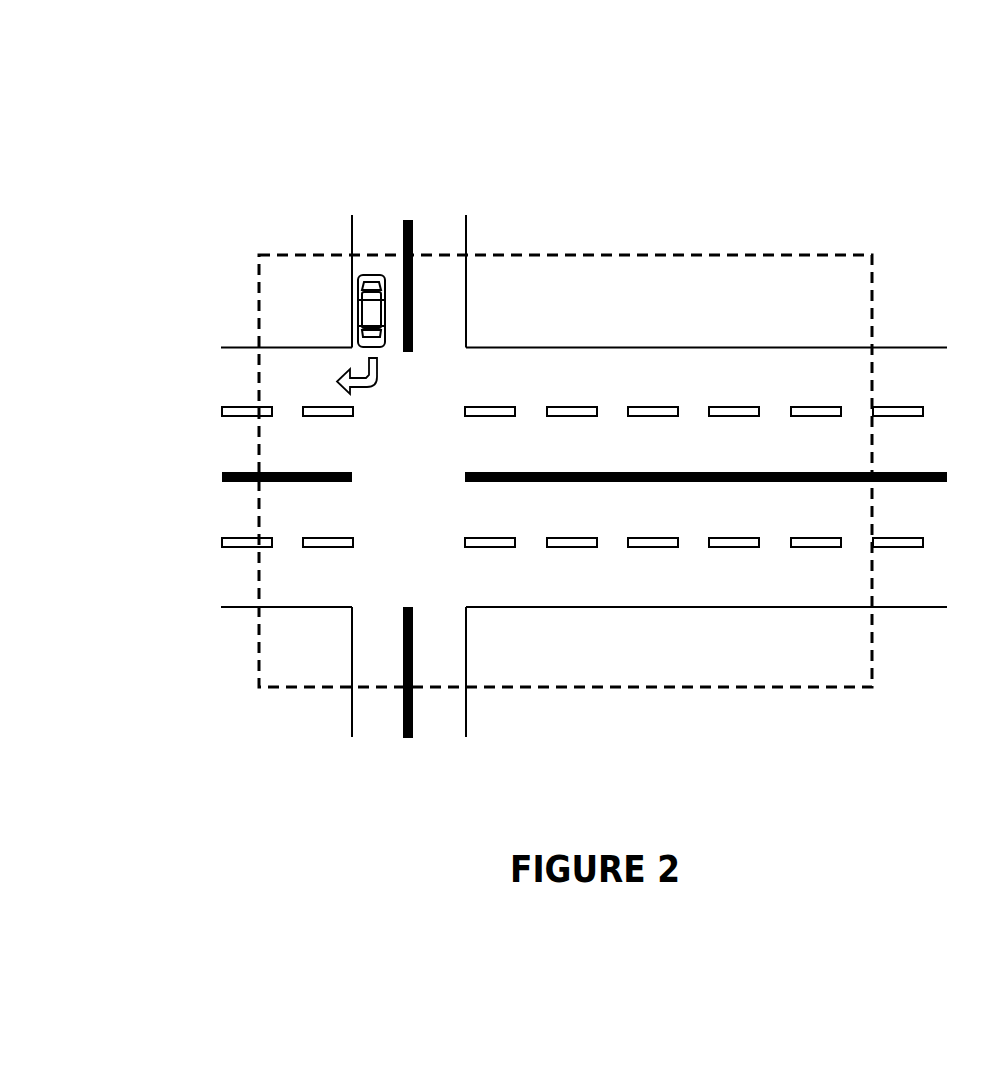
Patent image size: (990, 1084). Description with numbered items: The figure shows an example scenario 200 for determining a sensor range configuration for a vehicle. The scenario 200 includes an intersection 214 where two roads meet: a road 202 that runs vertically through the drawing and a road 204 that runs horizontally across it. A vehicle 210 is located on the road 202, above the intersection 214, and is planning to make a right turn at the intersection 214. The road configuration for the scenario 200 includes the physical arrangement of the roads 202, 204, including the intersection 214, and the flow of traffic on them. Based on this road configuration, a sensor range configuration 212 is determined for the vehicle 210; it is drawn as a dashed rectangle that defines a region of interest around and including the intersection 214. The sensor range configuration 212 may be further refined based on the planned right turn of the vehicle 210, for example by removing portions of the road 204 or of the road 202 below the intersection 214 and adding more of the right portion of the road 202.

The scenario 200 is at (879, 180).
The road 202 is at (452, 217).
The road 204 is at (222, 438).
The vehicle 210 is at (363, 277).
The sensor range configuration 212 is at (685, 255).
The intersection 214 is at (431, 484).